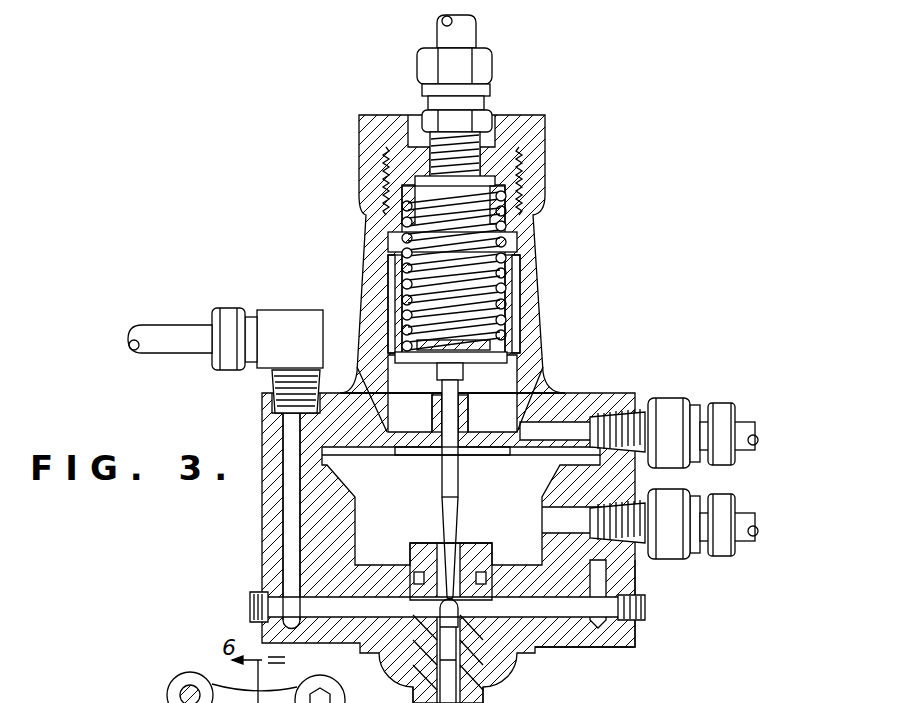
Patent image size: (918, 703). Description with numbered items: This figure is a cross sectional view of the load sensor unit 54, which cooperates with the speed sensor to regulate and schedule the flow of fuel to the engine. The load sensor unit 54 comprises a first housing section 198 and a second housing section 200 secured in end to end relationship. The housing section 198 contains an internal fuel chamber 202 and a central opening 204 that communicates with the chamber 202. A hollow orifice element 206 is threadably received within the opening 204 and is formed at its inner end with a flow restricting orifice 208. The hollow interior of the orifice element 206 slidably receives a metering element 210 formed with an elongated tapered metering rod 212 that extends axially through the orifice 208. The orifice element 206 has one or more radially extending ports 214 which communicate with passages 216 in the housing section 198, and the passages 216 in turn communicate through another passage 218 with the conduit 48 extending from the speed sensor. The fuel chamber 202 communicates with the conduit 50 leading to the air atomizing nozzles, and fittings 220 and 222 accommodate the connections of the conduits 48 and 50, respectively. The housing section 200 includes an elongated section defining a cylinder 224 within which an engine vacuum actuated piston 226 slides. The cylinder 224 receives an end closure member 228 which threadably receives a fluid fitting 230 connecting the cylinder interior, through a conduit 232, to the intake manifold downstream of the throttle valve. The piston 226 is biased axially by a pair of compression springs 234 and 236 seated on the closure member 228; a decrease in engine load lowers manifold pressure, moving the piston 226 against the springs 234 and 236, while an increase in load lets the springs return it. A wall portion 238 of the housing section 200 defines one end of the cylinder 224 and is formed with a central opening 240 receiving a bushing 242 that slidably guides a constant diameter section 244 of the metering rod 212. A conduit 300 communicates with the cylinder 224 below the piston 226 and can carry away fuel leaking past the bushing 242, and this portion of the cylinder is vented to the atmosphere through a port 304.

The conduit 48 is at (147, 328).
The conduit 50 is at (747, 510).
The load sensor unit 54 is at (548, 328).
The first housing section 198 is at (625, 633).
The second housing section 200 is at (546, 393).
The internal fuel chamber 202 is at (392, 488).
The central opening 204 is at (480, 631).
The hollow orifice element 206 is at (497, 702).
The flow restricting orifice 208 is at (420, 549).
The metering element 210 is at (443, 668).
The tapered metering rod 212 is at (455, 523).
The radially extending ports 214 is at (413, 593).
The passages 216 is at (330, 585).
The passage 218 is at (285, 518).
The fitting 220 is at (287, 293).
The fitting 222 is at (677, 556).
The cylinder 224 is at (517, 243).
The engine vacuum actuated piston 226 is at (512, 290).
The end closure member 228 is at (503, 168).
The fluid fitting 230 is at (483, 65).
The conduit 232 is at (438, 32).
The compression spring 234 is at (497, 214).
The compression spring 236 is at (496, 231).
The wall portion 238 is at (556, 398).
The central opening 240 is at (428, 450).
The bushing 242 is at (430, 412).
The constant diameter section 244 is at (455, 403).
The conduit 300 is at (748, 422).
The port 304 is at (375, 393).